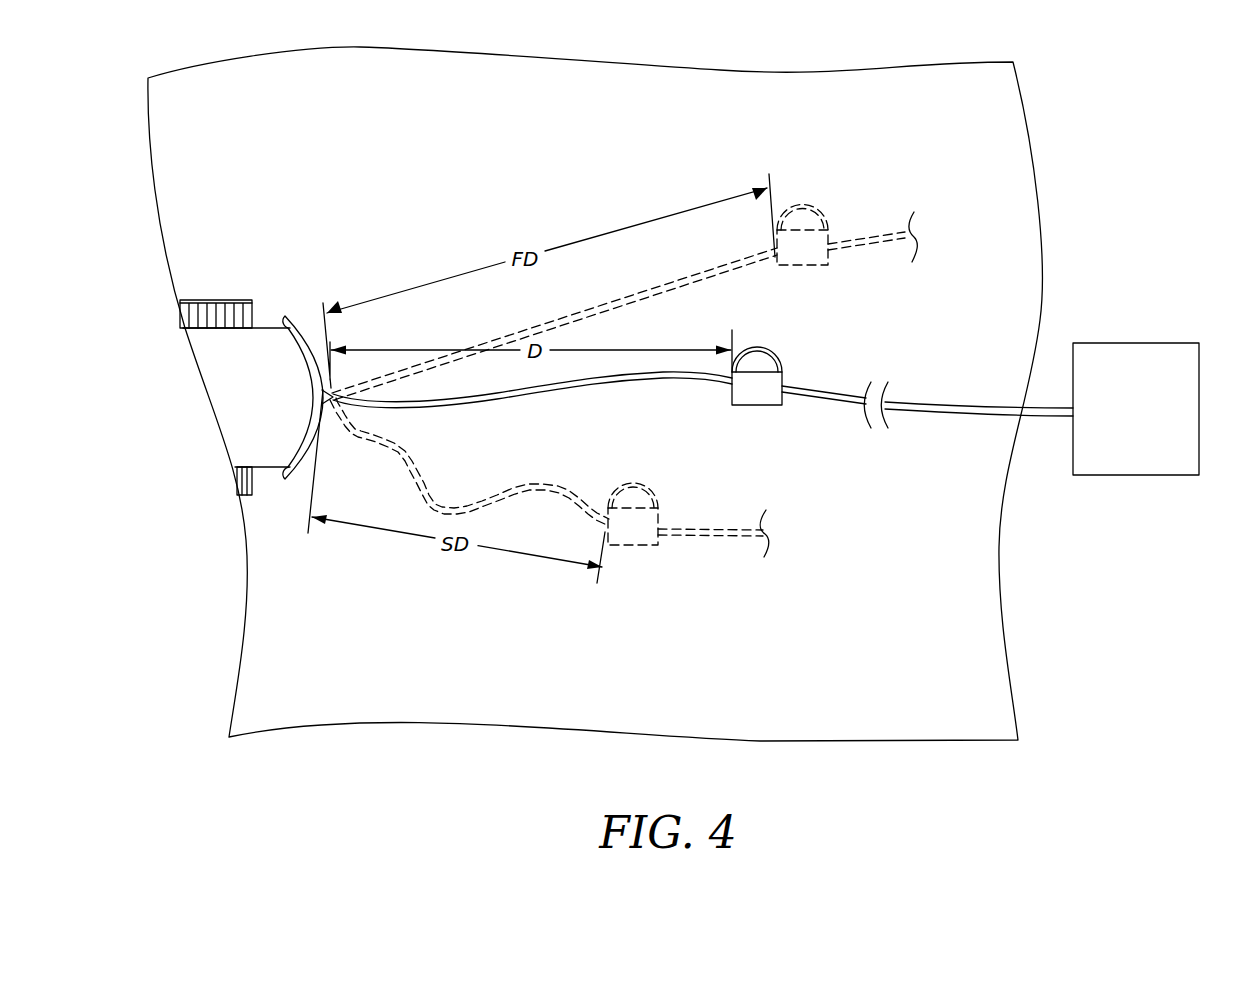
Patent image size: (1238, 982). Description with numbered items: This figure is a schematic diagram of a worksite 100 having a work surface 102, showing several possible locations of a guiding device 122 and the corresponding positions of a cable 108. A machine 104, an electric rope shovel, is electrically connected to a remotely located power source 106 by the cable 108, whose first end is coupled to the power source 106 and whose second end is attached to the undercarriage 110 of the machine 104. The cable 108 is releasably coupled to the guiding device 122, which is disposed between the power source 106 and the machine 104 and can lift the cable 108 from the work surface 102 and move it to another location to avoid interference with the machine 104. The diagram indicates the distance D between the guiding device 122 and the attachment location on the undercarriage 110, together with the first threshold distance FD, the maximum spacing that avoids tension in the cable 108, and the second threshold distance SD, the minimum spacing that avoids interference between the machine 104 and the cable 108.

The worksite 100 is at (1068, 128).
The work surface 102 is at (955, 150).
The machine 104 is at (237, 410).
The power source 106 is at (1120, 422).
The cable 108 is at (720, 276).
The undercarriage 110 is at (222, 300).
The guiding device 122 is at (805, 207).